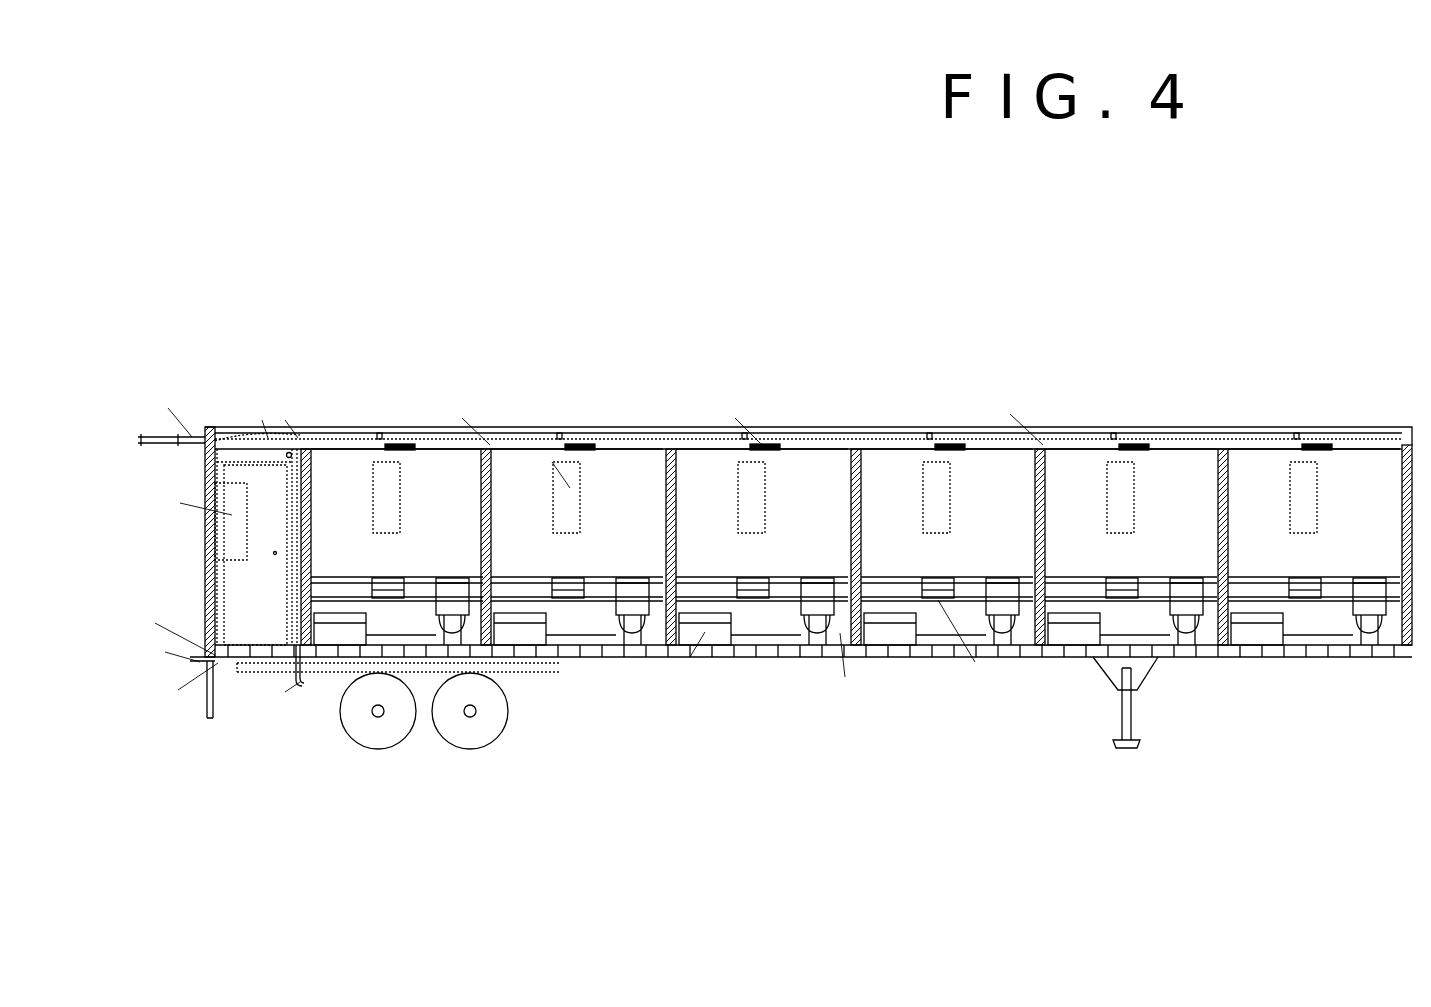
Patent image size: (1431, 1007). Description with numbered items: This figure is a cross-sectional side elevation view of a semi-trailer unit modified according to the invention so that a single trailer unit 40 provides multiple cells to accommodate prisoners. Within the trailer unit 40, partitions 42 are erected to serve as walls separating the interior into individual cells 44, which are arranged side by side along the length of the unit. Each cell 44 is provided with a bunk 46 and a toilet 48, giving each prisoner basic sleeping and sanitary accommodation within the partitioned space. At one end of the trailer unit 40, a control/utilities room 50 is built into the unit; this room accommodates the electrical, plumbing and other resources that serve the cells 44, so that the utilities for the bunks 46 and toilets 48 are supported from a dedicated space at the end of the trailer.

The trailer unit 40 is at (1102, 403).
The partitions 42 is at (489, 482).
The cells 44 is at (464, 532).
The bunk 46 is at (336, 614).
The toilet 48 is at (452, 627).
The control/utilities room 50 is at (277, 512).